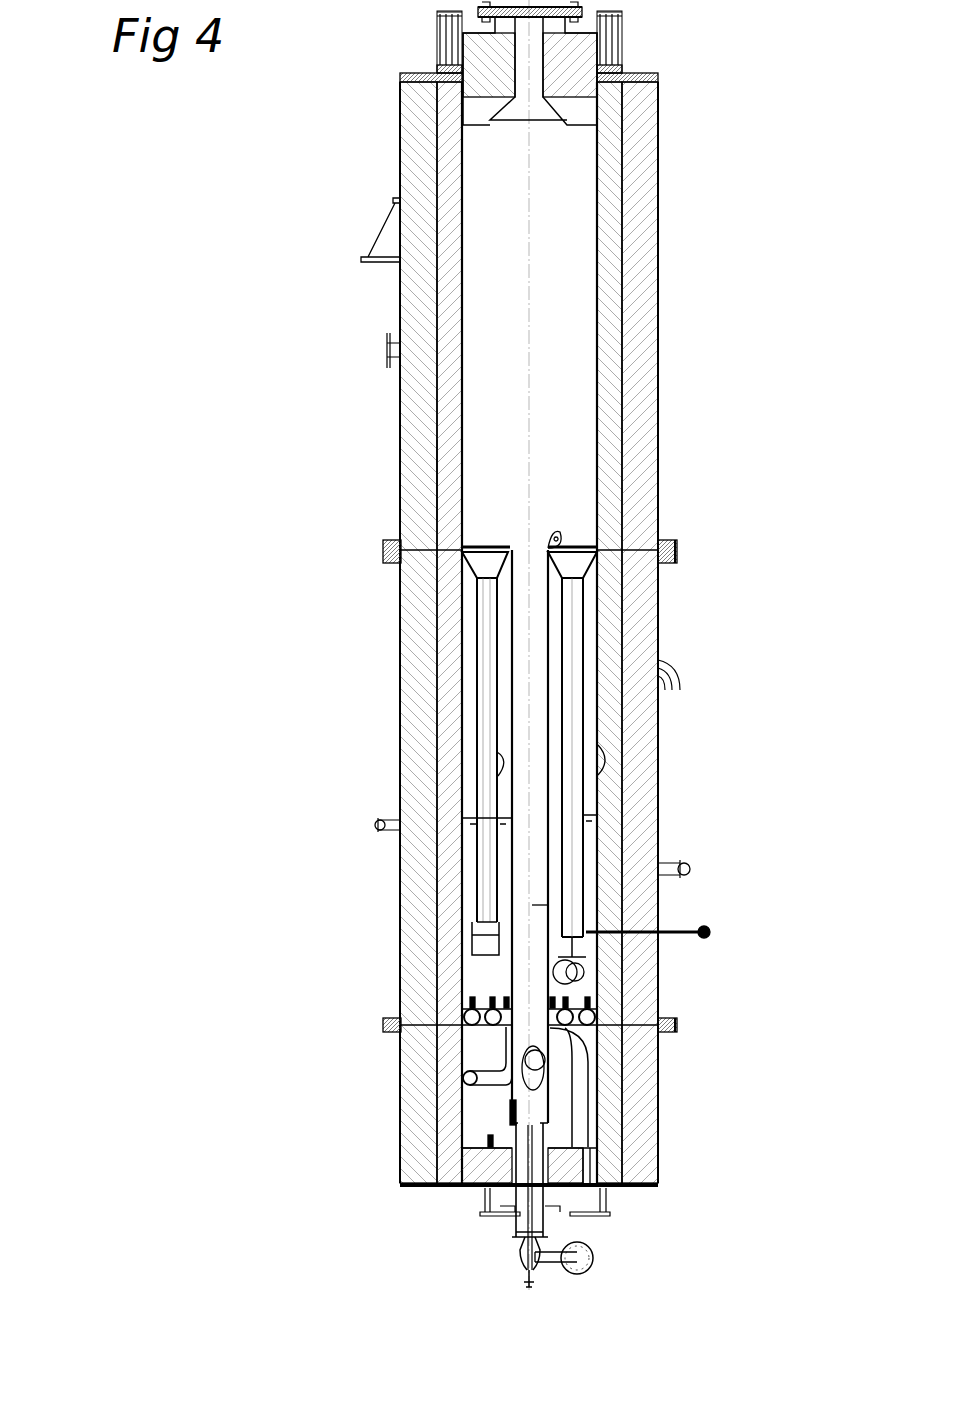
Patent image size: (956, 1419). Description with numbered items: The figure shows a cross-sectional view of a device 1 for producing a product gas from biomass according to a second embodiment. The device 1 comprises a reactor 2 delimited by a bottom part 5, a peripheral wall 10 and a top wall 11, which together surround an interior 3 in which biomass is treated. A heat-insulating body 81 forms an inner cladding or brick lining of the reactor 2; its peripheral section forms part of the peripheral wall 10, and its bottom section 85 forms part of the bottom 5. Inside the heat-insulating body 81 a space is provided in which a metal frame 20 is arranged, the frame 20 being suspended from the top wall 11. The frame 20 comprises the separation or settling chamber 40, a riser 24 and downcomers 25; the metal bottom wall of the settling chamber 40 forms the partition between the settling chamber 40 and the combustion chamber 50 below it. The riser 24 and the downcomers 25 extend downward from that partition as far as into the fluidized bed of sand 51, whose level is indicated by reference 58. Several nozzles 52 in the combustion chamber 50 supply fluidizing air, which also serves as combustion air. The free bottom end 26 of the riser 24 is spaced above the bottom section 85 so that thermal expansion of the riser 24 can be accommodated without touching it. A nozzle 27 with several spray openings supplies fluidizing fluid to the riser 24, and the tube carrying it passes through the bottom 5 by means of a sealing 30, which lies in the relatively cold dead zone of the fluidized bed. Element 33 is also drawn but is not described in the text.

The device 1 is at (667, 152).
The reactor 2 is at (666, 308).
The interior 3 is at (486, 329).
The bottom part 5 is at (640, 1188).
The peripheral wall 10 is at (402, 409).
The top wall 11 is at (407, 74).
The frame 20 is at (453, 213).
The riser 24 is at (510, 663).
The downcomers 25 is at (478, 608).
The bottom end 26 is at (510, 1088).
The nozzle 27 is at (545, 1152).
The sealing 30 is at (490, 1222).
The sensor 33 is at (510, 1112).
The settling chamber 40 is at (480, 162).
The combustion chamber 50 is at (472, 730).
The bed of sand 51 is at (472, 870).
The nozzles 52 is at (490, 996).
The level of the bed of sand 58 is at (467, 814).
The heat-insulating body 81 is at (422, 480).
The bottom section 85 is at (470, 1172).